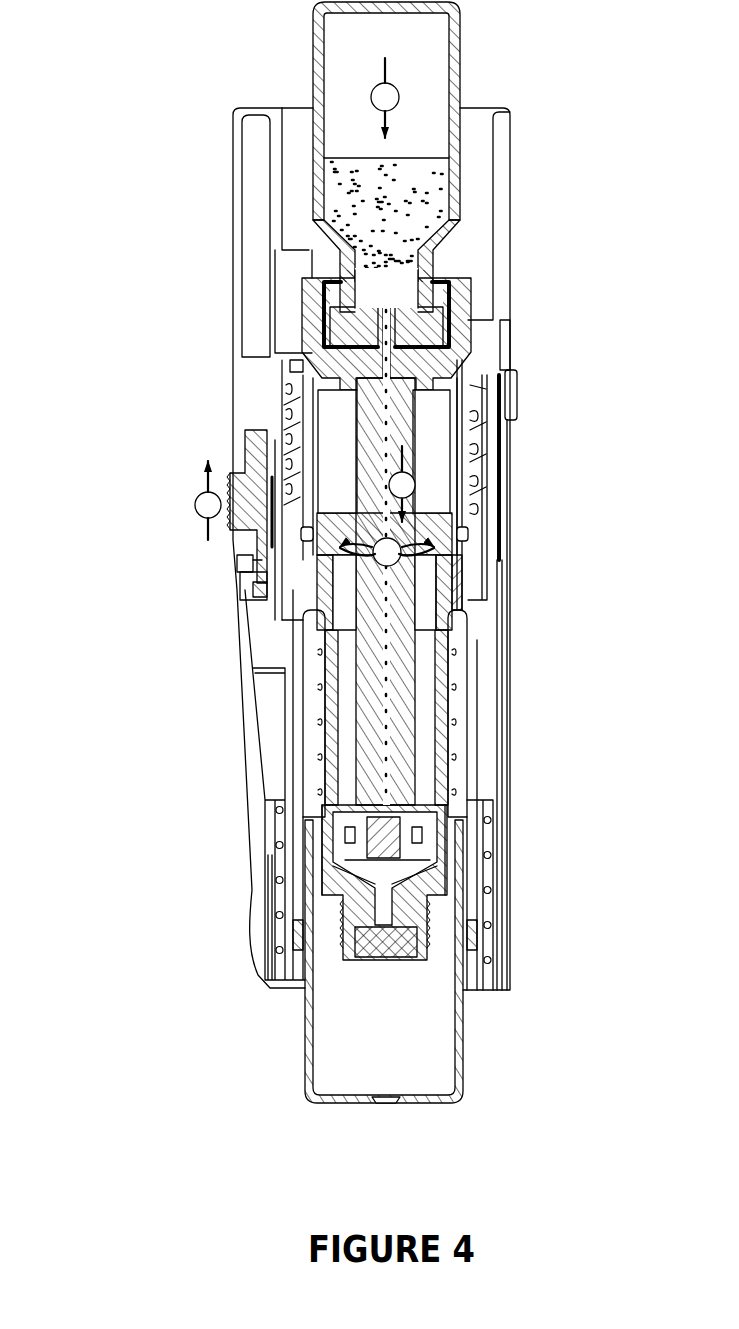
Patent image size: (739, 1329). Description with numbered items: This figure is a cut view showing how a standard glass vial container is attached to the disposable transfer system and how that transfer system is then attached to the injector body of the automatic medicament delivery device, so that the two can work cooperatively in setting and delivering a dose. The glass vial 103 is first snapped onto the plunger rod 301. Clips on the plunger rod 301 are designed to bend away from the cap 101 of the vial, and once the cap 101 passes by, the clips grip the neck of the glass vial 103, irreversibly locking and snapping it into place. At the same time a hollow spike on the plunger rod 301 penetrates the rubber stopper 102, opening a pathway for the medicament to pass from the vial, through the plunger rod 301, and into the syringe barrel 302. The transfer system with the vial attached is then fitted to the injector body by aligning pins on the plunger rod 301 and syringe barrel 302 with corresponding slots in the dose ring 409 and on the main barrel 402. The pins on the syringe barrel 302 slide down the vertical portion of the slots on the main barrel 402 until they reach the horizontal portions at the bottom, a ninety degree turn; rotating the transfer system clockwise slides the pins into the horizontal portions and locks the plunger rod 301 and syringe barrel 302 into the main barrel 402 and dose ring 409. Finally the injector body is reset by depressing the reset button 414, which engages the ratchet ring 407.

The glass vial 103 is at (313, 192).
The cap 101 is at (317, 303).
The rubber stopper 102 is at (443, 330).
The main barrel 402 is at (300, 422).
The dose ring 409 is at (298, 522).
The reset button 414 is at (248, 565).
The ratchet ring 407 is at (267, 597).
The plunger rod 301 is at (442, 530).
The syringe barrel 302 is at (440, 583).